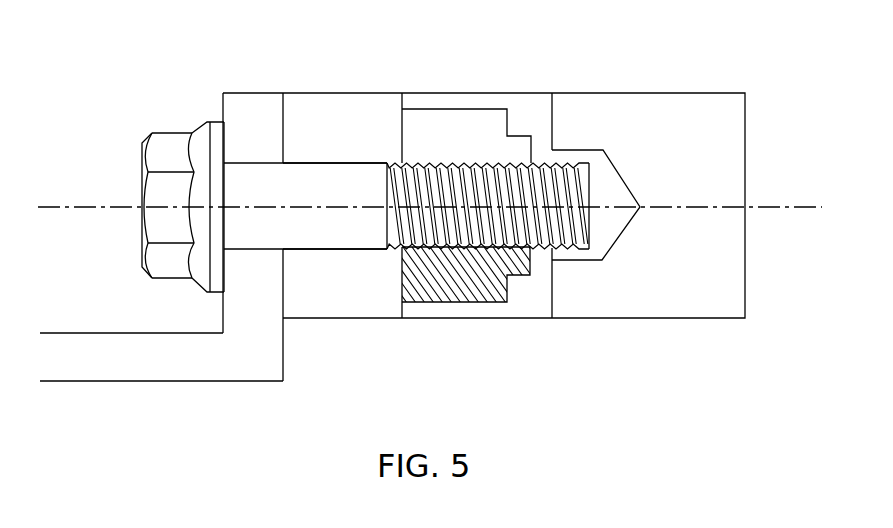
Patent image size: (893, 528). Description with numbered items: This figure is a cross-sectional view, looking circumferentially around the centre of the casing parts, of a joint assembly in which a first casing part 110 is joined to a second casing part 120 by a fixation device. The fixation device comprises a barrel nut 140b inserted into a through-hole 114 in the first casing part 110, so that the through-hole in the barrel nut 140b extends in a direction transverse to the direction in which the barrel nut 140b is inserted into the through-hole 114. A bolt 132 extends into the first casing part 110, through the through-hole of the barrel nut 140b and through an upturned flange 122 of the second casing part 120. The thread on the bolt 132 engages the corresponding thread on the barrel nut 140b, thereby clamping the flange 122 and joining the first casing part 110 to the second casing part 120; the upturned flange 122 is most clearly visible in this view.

The first casing part 110 is at (645, 305).
The through-hole 114 is at (550, 125).
The second casing part 120 is at (118, 370).
The flange 122 is at (255, 115).
The bolt 132 is at (556, 183).
The nut 140b is at (456, 130).